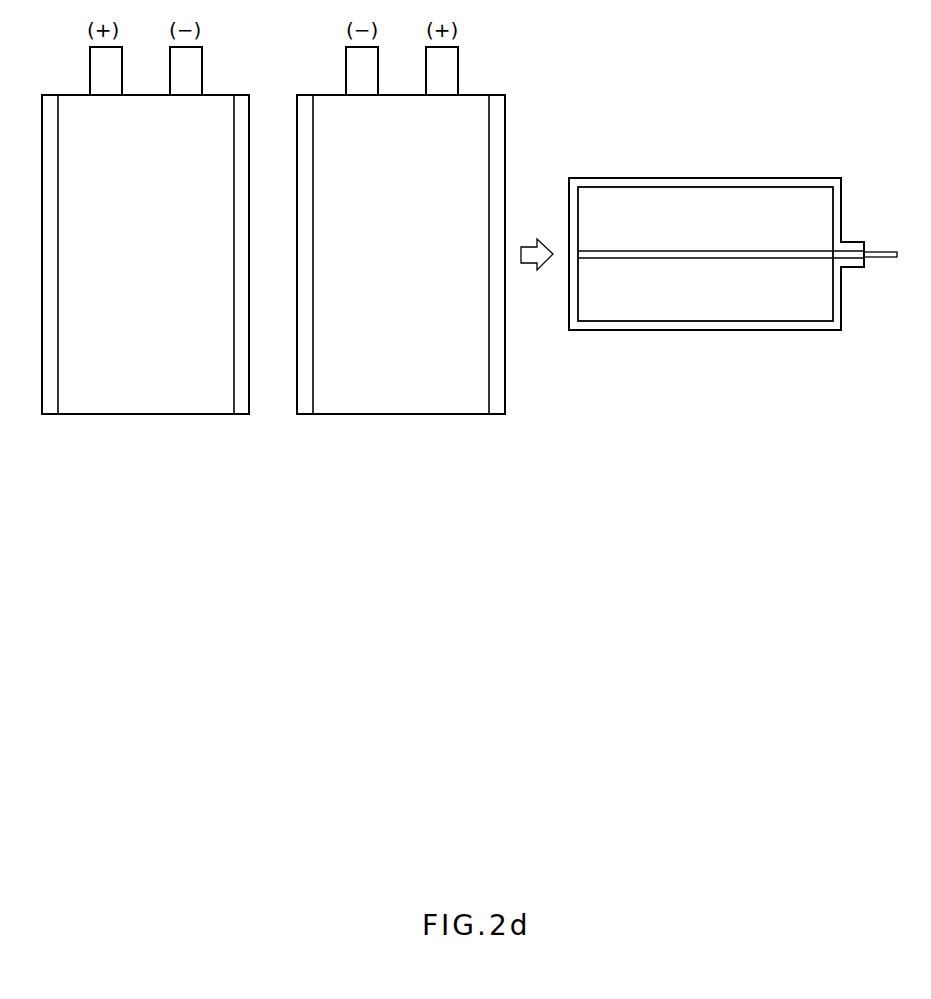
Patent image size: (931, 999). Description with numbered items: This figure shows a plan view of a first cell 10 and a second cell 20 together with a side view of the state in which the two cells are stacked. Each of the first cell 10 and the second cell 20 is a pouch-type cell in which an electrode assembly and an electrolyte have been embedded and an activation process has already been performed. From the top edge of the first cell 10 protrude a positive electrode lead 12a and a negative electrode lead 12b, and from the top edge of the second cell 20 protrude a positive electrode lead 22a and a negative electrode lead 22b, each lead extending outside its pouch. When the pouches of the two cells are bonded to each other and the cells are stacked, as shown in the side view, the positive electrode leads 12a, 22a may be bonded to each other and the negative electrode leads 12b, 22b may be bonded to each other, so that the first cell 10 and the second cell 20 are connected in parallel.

The first cell 10 is at (149, 433).
The second cell 20 is at (405, 433).
The positive electrode lead 12a is at (90, 70).
The negative electrode lead 12b is at (202, 70).
The positive electrode lead 22a is at (458, 70).
The negative electrode lead 22b is at (346, 70).